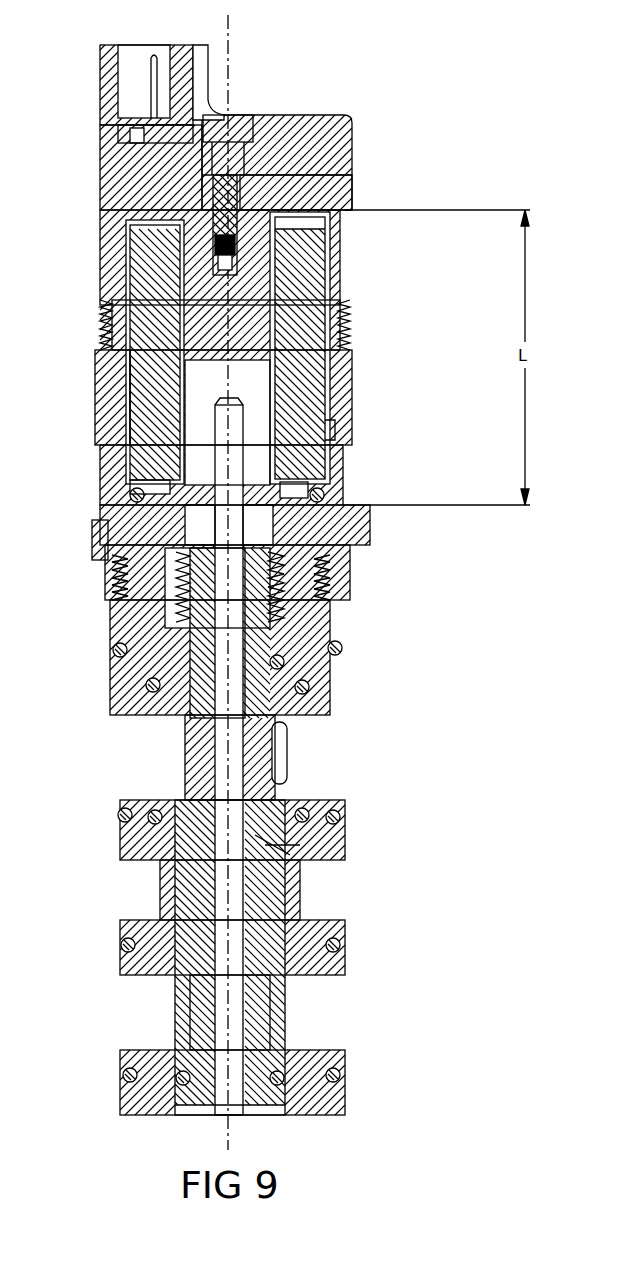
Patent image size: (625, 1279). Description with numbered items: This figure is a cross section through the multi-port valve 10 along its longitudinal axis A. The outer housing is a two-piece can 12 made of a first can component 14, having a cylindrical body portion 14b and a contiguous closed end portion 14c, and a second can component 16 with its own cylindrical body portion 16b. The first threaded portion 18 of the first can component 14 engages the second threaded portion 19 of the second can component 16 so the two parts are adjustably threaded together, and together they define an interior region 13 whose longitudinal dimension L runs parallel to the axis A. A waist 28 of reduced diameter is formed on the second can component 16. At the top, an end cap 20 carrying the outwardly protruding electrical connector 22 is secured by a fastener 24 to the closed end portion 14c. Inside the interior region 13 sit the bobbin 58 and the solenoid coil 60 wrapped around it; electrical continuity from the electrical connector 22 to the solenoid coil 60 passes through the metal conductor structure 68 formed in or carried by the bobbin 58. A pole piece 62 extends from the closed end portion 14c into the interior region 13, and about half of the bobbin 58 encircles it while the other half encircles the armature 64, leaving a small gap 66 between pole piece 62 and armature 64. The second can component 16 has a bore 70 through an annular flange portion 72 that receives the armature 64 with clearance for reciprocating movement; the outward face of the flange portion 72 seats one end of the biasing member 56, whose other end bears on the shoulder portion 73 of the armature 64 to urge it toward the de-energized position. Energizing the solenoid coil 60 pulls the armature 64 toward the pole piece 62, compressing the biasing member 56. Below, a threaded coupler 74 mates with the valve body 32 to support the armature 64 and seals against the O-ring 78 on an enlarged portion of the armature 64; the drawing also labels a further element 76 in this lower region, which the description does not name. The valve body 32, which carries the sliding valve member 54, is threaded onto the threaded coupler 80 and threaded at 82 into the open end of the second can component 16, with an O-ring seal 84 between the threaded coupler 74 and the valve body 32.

The multi-port valve 10 is at (438, 328).
The two-piece can 12 is at (392, 268).
The interior region 13 is at (340, 435).
The first can component 14 is at (345, 210).
The cylindrical body portion 14b is at (100, 222).
The closed end portion 14c is at (352, 170).
The second can component 16 is at (345, 500).
The cylindrical body portion 16b is at (100, 396).
The first threaded portion 18 is at (345, 310).
The second threaded portion 19 is at (108, 305).
The end cap 20 is at (335, 125).
The electrical connector 22 is at (150, 82).
The fastener 24 is at (262, 118).
The waist 28 is at (414, 434).
The valve body 32 is at (112, 886).
The valve member 54 is at (300, 848).
The biasing member 56 is at (278, 606).
The bobbin 58 is at (140, 493).
The solenoid coil 60 is at (320, 252).
The pole piece 62 is at (345, 350).
The armature 64 is at (215, 440).
The gap 66 is at (210, 362).
The metal conductor structure 68 is at (150, 148).
The bore 70 is at (110, 546).
The annular flange portion 72 is at (320, 510).
The shoulder portion 73 is at (328, 670).
The threaded coupler 74 is at (160, 718).
The seal 76 is at (135, 682).
The O-ring 78 is at (298, 722).
The threaded coupler 80 is at (145, 606).
The threaded connection 82 is at (120, 580).
The O-ring seal 84 is at (312, 682).
The longitudinal axis A is at (236, 62).